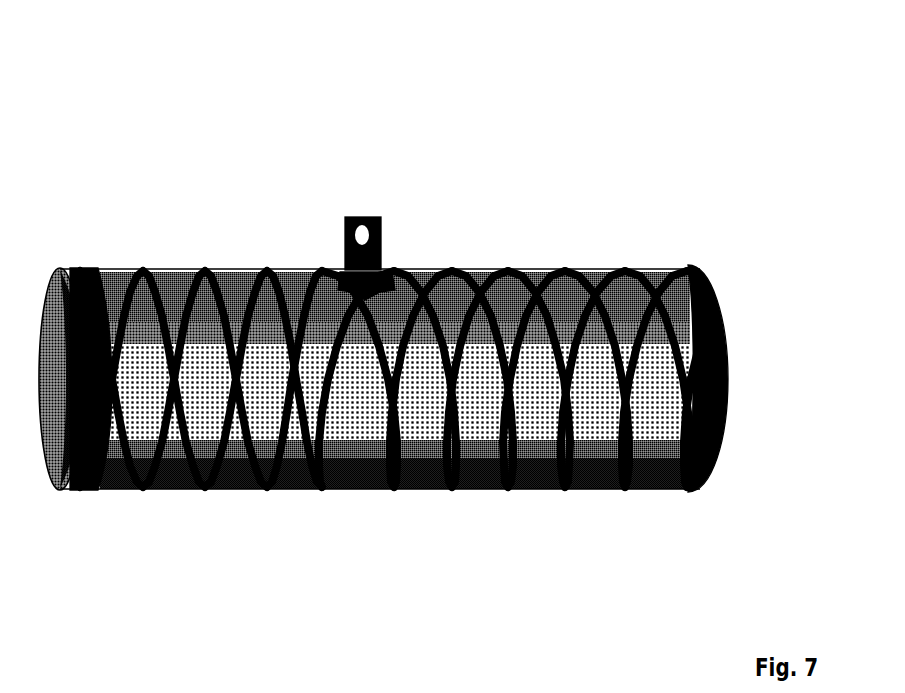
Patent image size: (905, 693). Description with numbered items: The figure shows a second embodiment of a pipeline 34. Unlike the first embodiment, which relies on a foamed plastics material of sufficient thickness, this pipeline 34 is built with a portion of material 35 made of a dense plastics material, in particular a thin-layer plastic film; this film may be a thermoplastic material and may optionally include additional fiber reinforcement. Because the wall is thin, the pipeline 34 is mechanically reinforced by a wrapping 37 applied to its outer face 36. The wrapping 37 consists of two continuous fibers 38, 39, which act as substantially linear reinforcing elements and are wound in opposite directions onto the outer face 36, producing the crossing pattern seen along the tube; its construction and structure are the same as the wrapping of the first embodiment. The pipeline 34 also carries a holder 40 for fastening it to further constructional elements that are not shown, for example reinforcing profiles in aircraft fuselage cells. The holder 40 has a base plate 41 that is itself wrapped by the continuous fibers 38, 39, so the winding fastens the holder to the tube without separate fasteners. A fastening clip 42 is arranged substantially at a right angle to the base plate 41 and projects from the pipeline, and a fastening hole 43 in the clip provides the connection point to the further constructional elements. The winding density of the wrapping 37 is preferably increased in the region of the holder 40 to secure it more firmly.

The pipeline 34 is at (476, 102).
The portion of material 35 is at (658, 283).
The outer face 36 is at (519, 267).
The wrapping 37 is at (456, 254).
The continuous fiber 38 is at (138, 318).
The continuous fiber 39 is at (222, 311).
The holder 40 is at (362, 197).
The base plate 41 is at (398, 286).
The fastening clip 42 is at (383, 238).
The fastening hole 43 is at (362, 232).